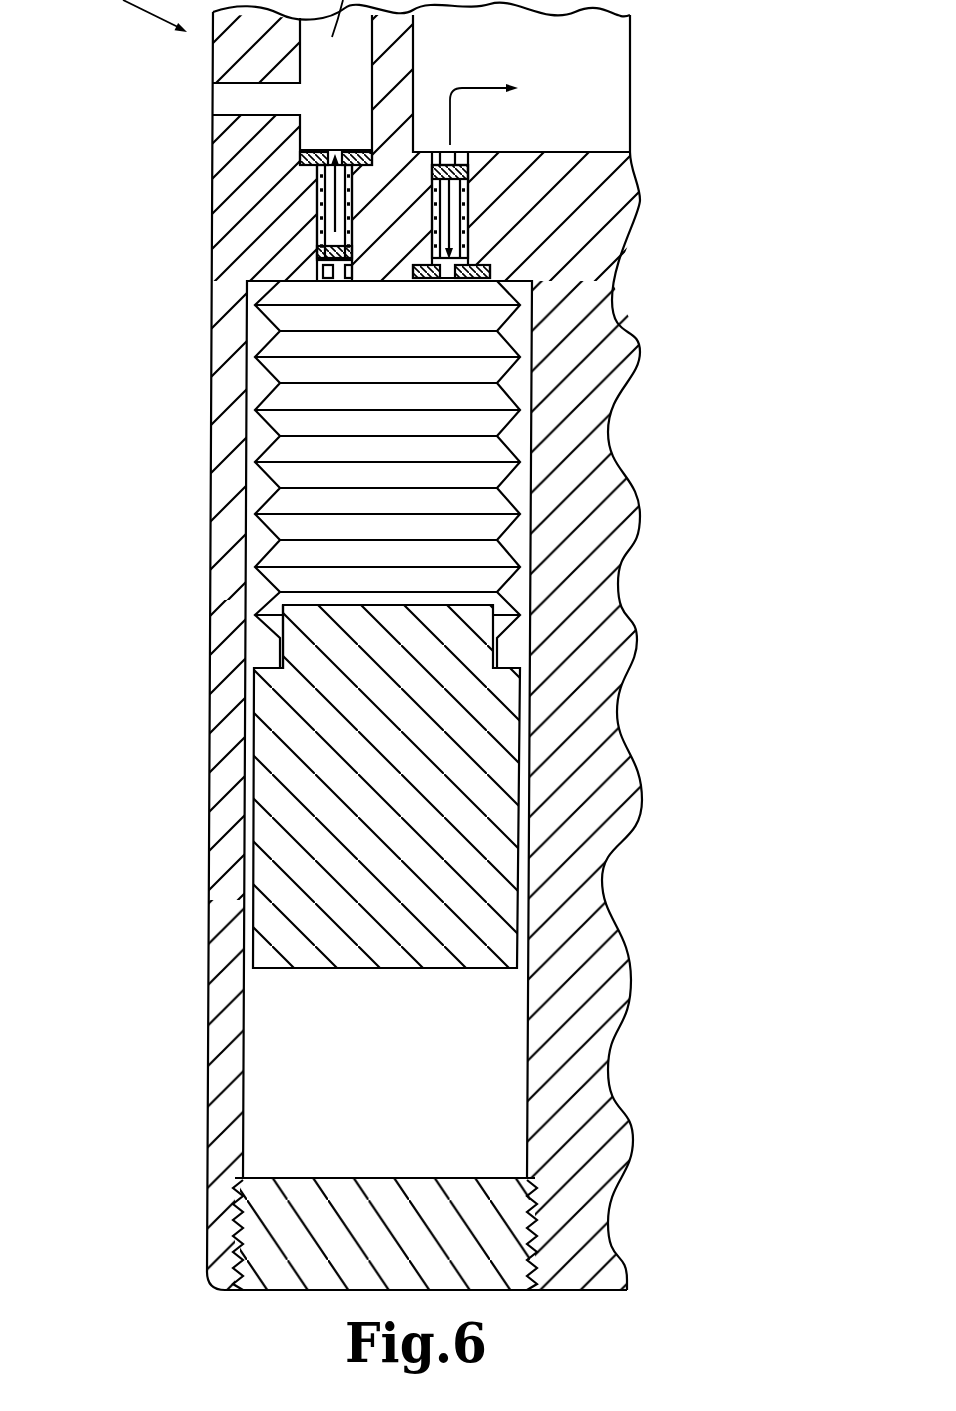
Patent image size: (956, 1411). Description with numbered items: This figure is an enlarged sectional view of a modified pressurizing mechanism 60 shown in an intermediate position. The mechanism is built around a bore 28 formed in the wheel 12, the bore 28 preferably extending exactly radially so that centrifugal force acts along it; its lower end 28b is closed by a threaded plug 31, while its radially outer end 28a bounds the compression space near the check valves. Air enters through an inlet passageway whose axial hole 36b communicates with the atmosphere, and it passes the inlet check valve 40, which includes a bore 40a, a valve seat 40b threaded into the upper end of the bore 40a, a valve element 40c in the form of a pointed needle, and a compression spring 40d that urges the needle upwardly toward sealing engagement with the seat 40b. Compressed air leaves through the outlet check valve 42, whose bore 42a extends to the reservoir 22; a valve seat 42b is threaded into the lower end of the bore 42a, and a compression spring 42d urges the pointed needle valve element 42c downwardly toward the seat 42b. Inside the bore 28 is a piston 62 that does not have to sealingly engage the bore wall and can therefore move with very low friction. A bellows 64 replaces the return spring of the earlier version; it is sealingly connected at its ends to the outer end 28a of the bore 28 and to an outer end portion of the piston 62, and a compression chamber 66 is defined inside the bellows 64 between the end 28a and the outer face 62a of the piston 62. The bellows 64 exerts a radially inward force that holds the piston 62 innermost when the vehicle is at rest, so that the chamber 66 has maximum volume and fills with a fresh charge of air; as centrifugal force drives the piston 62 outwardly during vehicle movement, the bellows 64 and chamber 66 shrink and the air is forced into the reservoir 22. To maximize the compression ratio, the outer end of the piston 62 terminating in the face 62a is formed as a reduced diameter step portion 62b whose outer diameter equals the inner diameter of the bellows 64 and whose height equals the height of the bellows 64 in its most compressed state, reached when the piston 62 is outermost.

The wheel 12 is at (583, 1023).
The reservoir 22 is at (550, 57).
The bore 28 is at (243, 1050).
The radially outer end of the bore 28a is at (297, 267).
The lower end of cavity 28b is at (290, 1178).
The threaded plug 31 is at (278, 1281).
The axial hole 36b is at (230, 97).
The inlet check valve 40 is at (282, 199).
The bore 40a is at (313, 217).
The valve seat 40b is at (303, 157).
The valve element 40c is at (318, 182).
The compression spring 40d is at (317, 247).
The outlet check valve 42 is at (503, 220).
The bore 42a is at (472, 199).
The valve seat 42b is at (488, 270).
The valve element 42c is at (512, 248).
The compression spring 42d is at (457, 172).
The mechanism 60 is at (160, 410).
The piston 62 is at (510, 792).
The outer face of the piston 62a is at (432, 603).
The reduced diameter step portion 62b is at (320, 625).
The bellows 64 is at (490, 477).
The compression chamber 66 is at (330, 500).